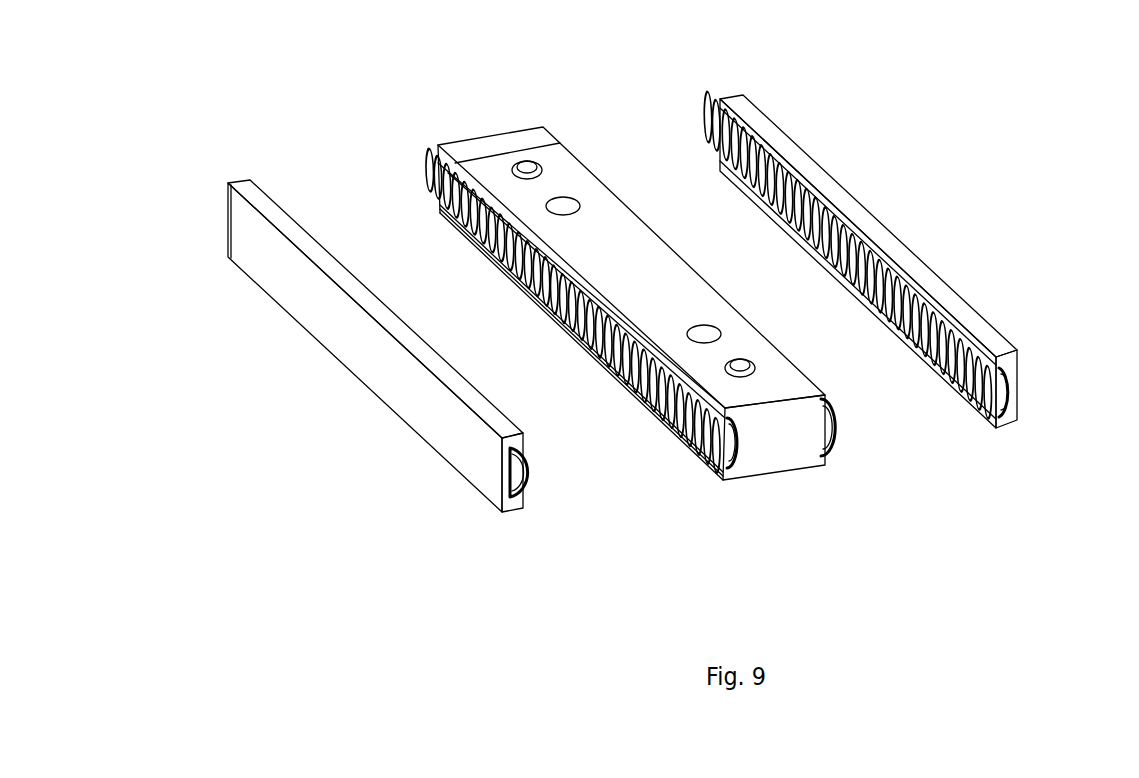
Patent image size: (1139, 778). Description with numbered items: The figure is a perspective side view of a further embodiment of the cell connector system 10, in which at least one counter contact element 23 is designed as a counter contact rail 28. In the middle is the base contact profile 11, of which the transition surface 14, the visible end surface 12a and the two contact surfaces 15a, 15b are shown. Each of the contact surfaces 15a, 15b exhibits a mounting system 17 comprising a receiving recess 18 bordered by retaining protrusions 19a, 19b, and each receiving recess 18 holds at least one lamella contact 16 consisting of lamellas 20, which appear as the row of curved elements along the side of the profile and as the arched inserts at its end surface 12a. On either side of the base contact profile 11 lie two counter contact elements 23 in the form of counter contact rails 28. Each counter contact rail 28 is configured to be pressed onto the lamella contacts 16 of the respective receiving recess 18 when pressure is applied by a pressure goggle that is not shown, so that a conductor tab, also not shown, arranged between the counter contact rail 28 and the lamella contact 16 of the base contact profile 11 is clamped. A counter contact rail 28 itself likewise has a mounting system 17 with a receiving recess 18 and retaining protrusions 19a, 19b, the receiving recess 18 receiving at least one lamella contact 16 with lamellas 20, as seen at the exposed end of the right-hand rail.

The cell connector system 10 is at (364, 168).
The base contact profile 11 is at (600, 203).
The end surface 12a is at (790, 445).
The transition surface 14 is at (640, 273).
The contact surface 15a is at (1008, 412).
The contact surface 15b is at (830, 450).
The lamella contact 16 is at (765, 346).
The mounting system 17 is at (735, 489).
The receiving recess 18 is at (735, 489).
The retaining protrusion 19a is at (723, 103).
The retaining protrusion 19b is at (717, 168).
The lamella 20 is at (828, 408).
The counter contact element 23 is at (622, 296).
The counter contact rail 28 is at (319, 300).